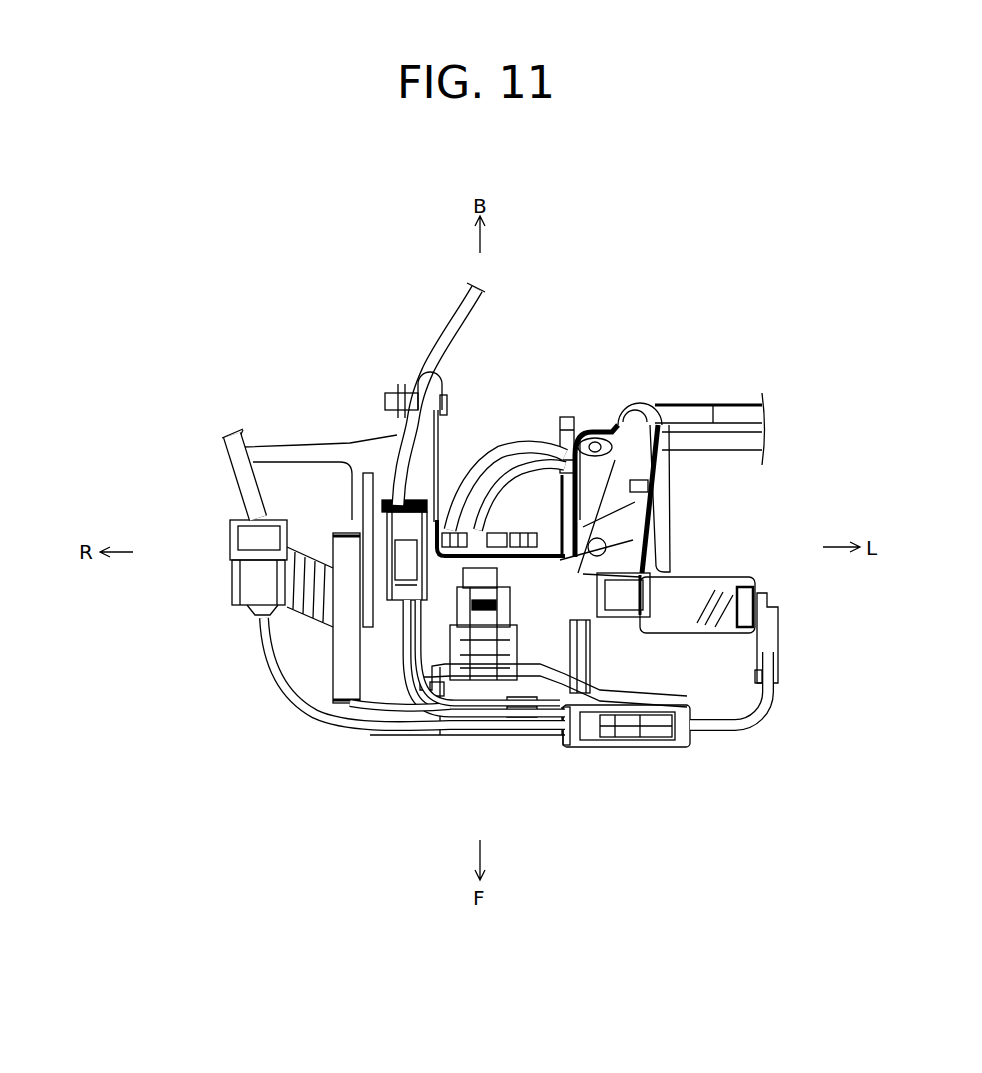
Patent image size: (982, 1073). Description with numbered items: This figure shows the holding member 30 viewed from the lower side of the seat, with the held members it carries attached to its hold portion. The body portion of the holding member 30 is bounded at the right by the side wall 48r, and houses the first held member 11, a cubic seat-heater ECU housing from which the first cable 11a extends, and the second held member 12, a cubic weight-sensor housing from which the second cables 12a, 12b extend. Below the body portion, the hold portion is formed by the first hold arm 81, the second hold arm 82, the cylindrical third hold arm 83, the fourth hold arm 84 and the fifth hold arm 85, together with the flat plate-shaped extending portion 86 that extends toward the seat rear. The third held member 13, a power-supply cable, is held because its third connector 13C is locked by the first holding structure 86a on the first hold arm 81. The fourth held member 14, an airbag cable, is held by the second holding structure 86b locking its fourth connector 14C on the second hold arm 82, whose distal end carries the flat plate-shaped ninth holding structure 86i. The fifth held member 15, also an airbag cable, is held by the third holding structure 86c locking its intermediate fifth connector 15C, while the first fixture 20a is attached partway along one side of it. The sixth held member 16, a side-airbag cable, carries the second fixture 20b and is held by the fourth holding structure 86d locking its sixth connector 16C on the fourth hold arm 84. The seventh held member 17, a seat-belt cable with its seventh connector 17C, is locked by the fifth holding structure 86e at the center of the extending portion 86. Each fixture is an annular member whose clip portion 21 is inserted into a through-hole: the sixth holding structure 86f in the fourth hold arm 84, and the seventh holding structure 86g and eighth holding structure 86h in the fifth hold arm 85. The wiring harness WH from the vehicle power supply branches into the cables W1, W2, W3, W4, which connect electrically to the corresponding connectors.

The sixth held member 16 is at (468, 291).
The second fixture 20b is at (403, 390).
The sixth holding structure 86f is at (438, 385).
The fourth hold arm 84 is at (447, 400).
The clip portion 21 is at (596, 438).
The fifth hold arm 85 is at (615, 420).
The eighth holding structure 86h is at (646, 386).
The first fixture 20a is at (660, 406).
The seventh held member 17 is at (540, 455).
The second cable 12b is at (515, 445).
The second cable 12a is at (470, 485).
The first cable 11a is at (288, 450).
The sixth connector 16C is at (373, 485).
The third held member 13 is at (240, 475).
The fourth holding structure 86d is at (365, 520).
The third connector 13C is at (245, 535).
The first holding structure 86a is at (230, 577).
The seventh holding structure 86g is at (640, 488).
The fifth held member 15 is at (666, 523).
The side wall 48r is at (575, 557).
The third hold arm 83 is at (693, 578).
The ninth holding structure 86i is at (767, 597).
The first hold arm 81 is at (310, 620).
The cable W1 is at (280, 670).
The cable W3 is at (350, 703).
The holding member 30 is at (410, 705).
The extending portion 86 is at (438, 692).
The cable W4 is at (420, 717).
The cable W2 is at (427, 733).
The second held member 12 is at (437, 690).
The first held member 11 is at (457, 717).
The fifth holding structure 86e is at (515, 597).
The third holding structure 86c is at (600, 622).
The fifth connector 15C is at (637, 600).
The seventh connector 17C is at (537, 700).
The wiring harness WH is at (480, 760).
The second holding structure 86b is at (648, 693).
The fourth connector 14C is at (647, 747).
The second hold arm 82 is at (677, 750).
The fourth held member 14 is at (745, 718).